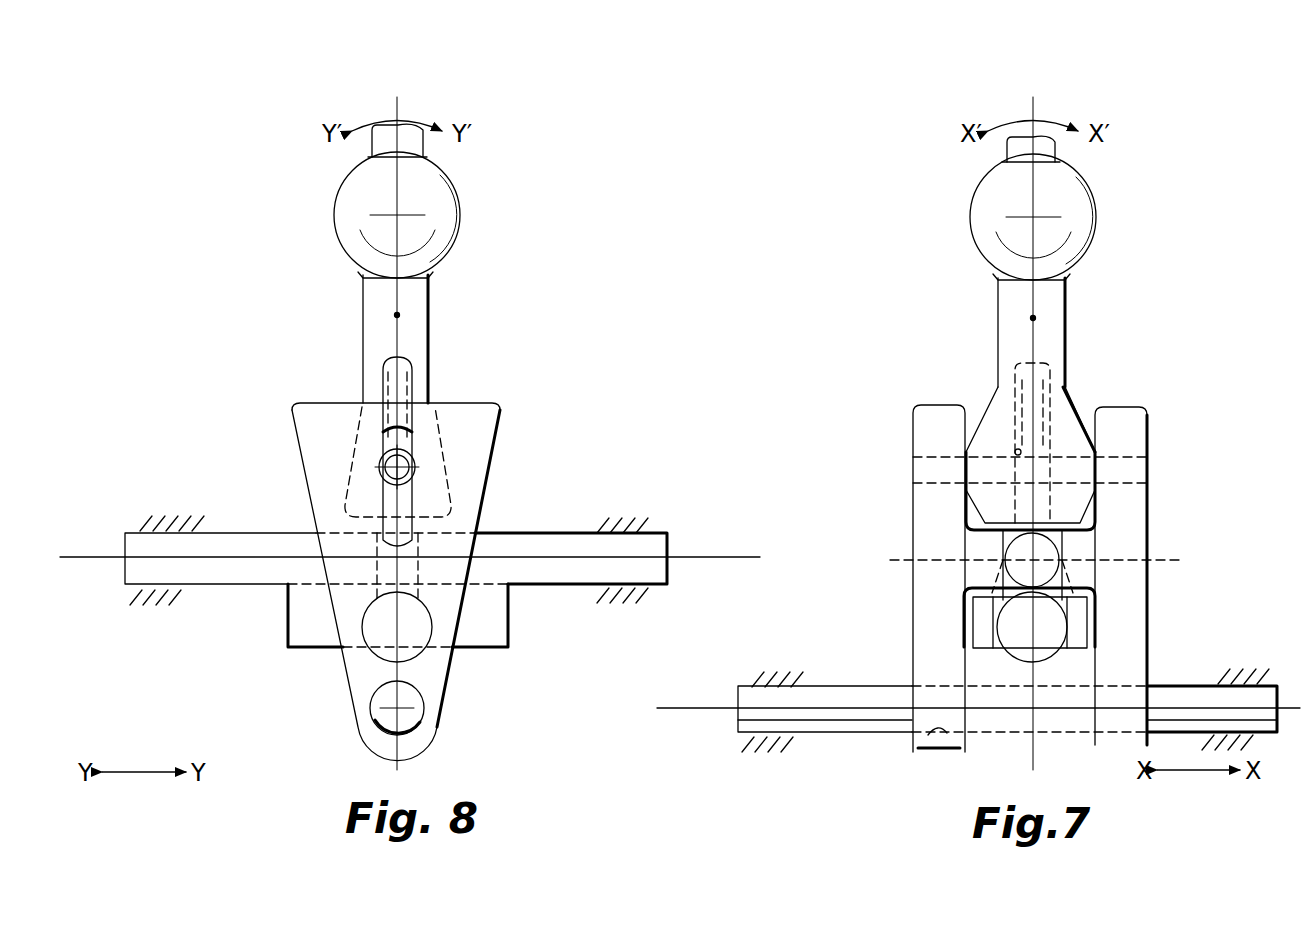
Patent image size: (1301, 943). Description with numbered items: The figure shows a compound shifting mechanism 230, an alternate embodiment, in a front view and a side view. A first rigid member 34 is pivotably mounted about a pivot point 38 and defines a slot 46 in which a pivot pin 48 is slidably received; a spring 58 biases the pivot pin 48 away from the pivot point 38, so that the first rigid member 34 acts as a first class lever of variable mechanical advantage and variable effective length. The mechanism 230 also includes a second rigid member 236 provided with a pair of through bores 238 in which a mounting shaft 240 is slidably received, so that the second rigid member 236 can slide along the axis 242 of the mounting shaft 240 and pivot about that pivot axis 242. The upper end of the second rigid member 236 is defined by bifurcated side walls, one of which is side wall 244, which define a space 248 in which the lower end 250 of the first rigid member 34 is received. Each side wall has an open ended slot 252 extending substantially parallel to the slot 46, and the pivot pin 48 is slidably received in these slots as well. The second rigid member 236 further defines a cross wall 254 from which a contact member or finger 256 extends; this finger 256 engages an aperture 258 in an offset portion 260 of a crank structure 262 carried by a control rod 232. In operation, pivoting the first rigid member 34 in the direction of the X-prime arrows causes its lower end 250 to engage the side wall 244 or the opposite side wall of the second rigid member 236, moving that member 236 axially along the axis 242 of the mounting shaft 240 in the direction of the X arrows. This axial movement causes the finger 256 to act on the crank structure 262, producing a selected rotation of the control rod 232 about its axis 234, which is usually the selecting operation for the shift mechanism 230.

In FIG. 8, the first rigid member 34 is at (472, 213).
In FIG. 7, the first rigid member 34 is at (980, 272).
In FIG. 8, the pivot point 38 is at (397, 315).
In FIG. 7, the pivot point 38 is at (1045, 309).
In FIG. 8, the slot 46 is at (405, 437).
In FIG. 8, the pivot pin 48 is at (407, 450).
In FIG. 7, the pivot pin 48 is at (985, 455).
In FIG. 7, the spring 58 is at (1050, 380).
In FIG. 8, the compound shifting mechanism 230 is at (537, 275).
In FIG. 7, the compound shifting mechanism 230 is at (1180, 275).
In FIG. 8, the control rod 232 is at (640, 549).
In FIG. 7, the control rod 232 is at (1010, 575).
In FIG. 8, the axis 234 is at (97, 557).
In FIG. 7, the axis 234 is at (1045, 555).
In FIG. 8, the second rigid member 236 is at (532, 506).
In FIG. 7, the second rigid member 236 is at (1157, 608).
In FIG. 8, the through bores 238 is at (417, 712).
In FIG. 7, the through bores 238 is at (912, 755).
In FIG. 8, the mounting shaft 240 is at (433, 733).
In FIG. 7, the mounting shaft 240 is at (758, 722).
In FIG. 8, the axis 242 is at (395, 712).
In FIG. 7, the axis 242 is at (672, 708).
In FIG. 7, the side wall 244 is at (1147, 428).
In FIG. 7, the space 248 is at (988, 455).
In FIG. 8, the lower end 250 is at (437, 492).
In FIG. 7, the lower end 250 is at (997, 505).
In FIG. 8, the open ended slot 252 is at (385, 498).
In FIG. 8, the cross wall 254 is at (343, 573).
In FIG. 7, the cross wall 254 is at (1000, 555).
In FIG. 8, the finger member 256 is at (450, 658).
In FIG. 7, the finger member 256 is at (985, 632).
In FIG. 8, the aperture 258 is at (365, 647).
In FIG. 7, the aperture 258 is at (1085, 630).
In FIG. 8, the offset portion 260 is at (495, 626).
In FIG. 7, the offset portion 260 is at (987, 648).
In FIG. 8, the crank structure 262 is at (240, 603).